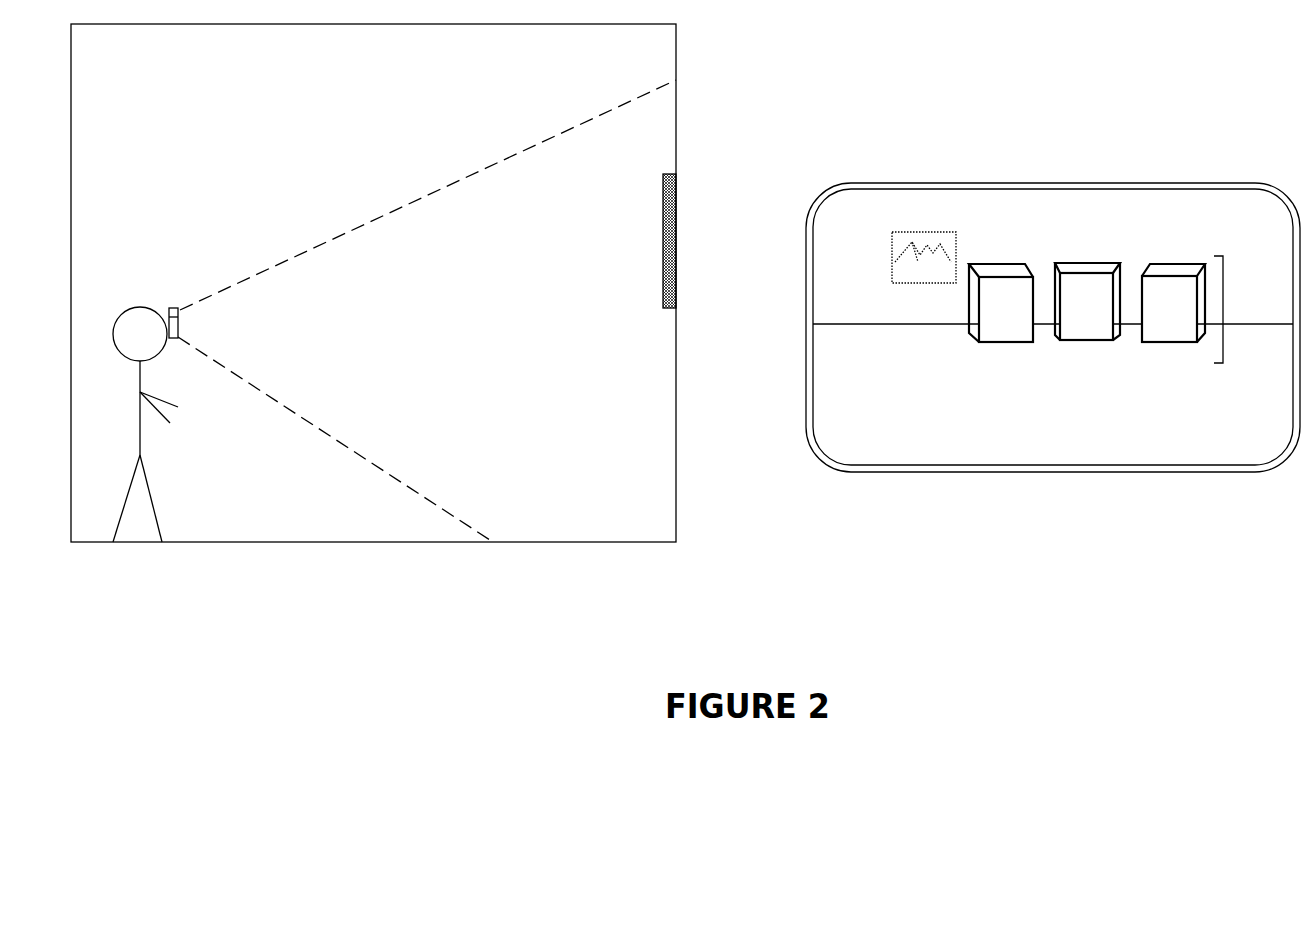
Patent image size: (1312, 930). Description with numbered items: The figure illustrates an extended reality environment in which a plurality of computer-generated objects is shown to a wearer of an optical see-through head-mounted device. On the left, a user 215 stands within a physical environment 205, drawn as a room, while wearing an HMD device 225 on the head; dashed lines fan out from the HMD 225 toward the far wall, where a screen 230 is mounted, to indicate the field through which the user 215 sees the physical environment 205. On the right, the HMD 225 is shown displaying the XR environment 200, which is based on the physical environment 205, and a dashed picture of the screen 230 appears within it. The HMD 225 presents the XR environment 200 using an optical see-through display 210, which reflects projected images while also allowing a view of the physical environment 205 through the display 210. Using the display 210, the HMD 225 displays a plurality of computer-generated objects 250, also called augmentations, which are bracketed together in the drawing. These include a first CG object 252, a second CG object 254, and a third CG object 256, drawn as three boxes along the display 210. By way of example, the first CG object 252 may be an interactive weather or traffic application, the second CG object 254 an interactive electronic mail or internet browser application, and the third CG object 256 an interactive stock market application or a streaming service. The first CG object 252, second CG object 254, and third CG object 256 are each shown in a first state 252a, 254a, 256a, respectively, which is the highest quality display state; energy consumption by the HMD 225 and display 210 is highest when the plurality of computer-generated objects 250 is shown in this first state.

The XR environment 200 is at (872, 219).
The physical environment 205 is at (505, 67).
The optical see-through display 210 is at (811, 297).
The user 215 is at (143, 423).
The HMD device 225 is at (178, 326).
The display screen / captured image 230 is at (677, 188).
The plurality of computer-generated objects 250 is at (1223, 312).
The first CG object 252 is at (1024, 319).
The first state 252a is at (993, 342).
The second CG object 254 is at (1105, 319).
The first state 254a is at (1070, 262).
The third CG object 256 is at (1187, 309).
The first state 256a is at (1177, 342).